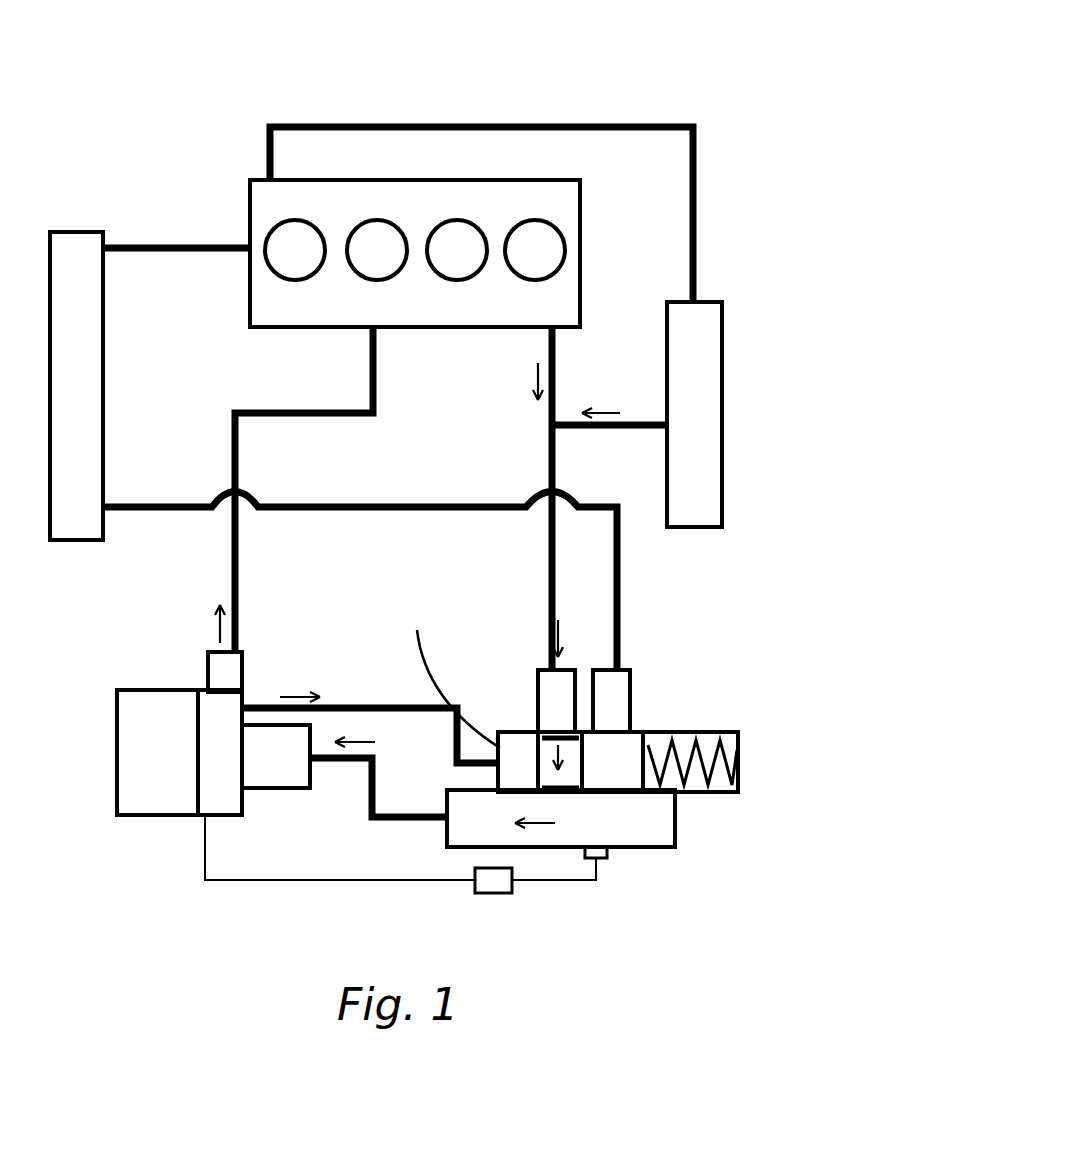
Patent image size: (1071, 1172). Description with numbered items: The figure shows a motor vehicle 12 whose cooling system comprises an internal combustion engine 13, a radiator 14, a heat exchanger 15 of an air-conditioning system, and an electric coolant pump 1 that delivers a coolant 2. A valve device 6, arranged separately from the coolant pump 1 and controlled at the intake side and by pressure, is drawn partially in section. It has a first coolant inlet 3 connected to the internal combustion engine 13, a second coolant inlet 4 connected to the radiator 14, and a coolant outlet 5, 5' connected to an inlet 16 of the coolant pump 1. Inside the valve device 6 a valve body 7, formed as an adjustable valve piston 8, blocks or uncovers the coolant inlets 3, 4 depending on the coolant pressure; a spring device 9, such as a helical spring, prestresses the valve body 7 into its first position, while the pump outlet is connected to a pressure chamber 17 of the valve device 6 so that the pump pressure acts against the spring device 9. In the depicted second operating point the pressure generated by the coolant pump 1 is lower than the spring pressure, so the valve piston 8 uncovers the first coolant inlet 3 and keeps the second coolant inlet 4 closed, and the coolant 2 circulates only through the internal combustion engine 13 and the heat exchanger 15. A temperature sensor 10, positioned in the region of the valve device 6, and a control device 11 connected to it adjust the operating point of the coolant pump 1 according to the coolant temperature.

The coolant pump 1 is at (162, 774).
The coolant 2 is at (720, 230).
The first coolant inlet 3 is at (550, 696).
The second coolant inlet 4 is at (615, 695).
The coolant outlet 5 is at (252, 648).
The outlet 5' is at (533, 830).
The valve device 6 is at (727, 740).
The valve body 7 is at (632, 777).
The valve piston 8 is at (622, 783).
The spring device 9 is at (727, 768).
The temperature sensor 10 is at (605, 858).
The control device 11 is at (495, 883).
The motor vehicle 12 is at (700, 98).
The internal combustion engine 13 is at (552, 213).
The radiator 14 is at (83, 373).
The heat exchanger 15 is at (693, 422).
The inlet 16 is at (315, 765).
The pressure chamber 17 is at (449, 665).